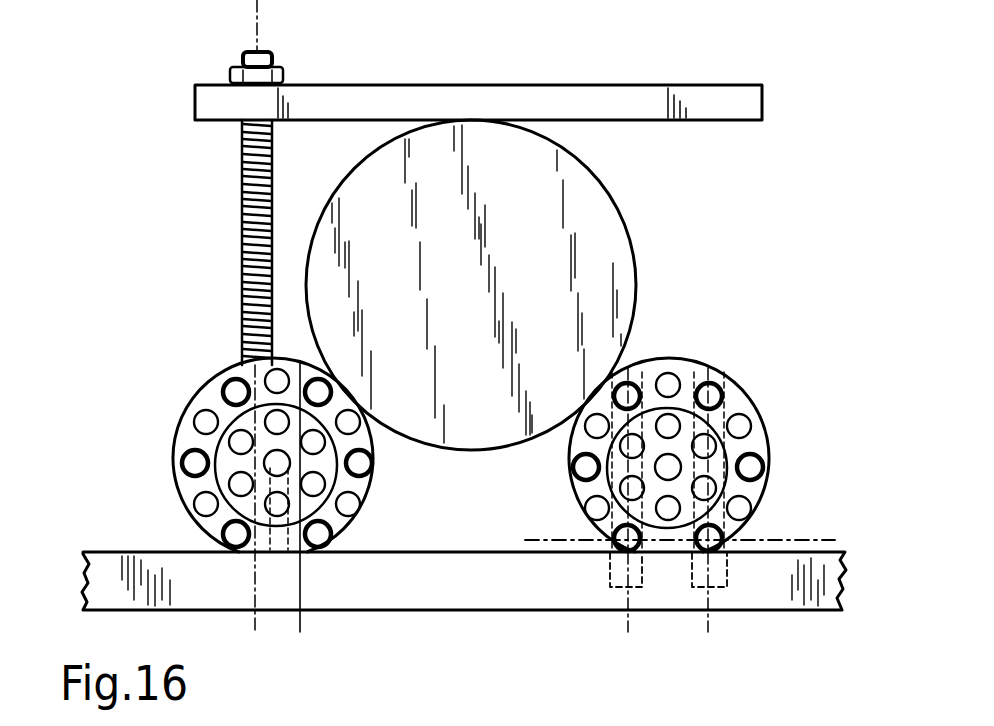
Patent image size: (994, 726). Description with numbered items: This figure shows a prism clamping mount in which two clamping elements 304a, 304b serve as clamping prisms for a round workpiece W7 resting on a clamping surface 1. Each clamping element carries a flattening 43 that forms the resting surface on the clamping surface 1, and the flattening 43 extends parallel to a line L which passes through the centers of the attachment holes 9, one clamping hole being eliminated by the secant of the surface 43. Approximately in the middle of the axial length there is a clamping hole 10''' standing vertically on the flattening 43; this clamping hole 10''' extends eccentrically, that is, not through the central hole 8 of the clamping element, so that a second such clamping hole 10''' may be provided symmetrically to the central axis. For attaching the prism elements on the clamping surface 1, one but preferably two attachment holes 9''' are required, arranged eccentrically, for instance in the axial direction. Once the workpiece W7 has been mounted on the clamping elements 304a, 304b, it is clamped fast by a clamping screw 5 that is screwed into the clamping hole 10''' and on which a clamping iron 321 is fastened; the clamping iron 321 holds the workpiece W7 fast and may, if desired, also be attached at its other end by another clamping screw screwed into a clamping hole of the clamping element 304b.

The clamping iron 321 is at (620, 98).
The clamping screw 5 is at (242, 214).
The round workpiece W7 is at (636, 306).
The clamping element 304a is at (184, 410).
The clamping element 304b is at (750, 398).
The central hole 8 is at (280, 463).
The attachment hole 9 is at (456, 592).
The attachment hole 9''' is at (682, 479).
The clamping hole 10''' is at (274, 485).
The clamping surface 1 is at (458, 543).
The flattening 43 is at (275, 553).
The line L is at (816, 531).